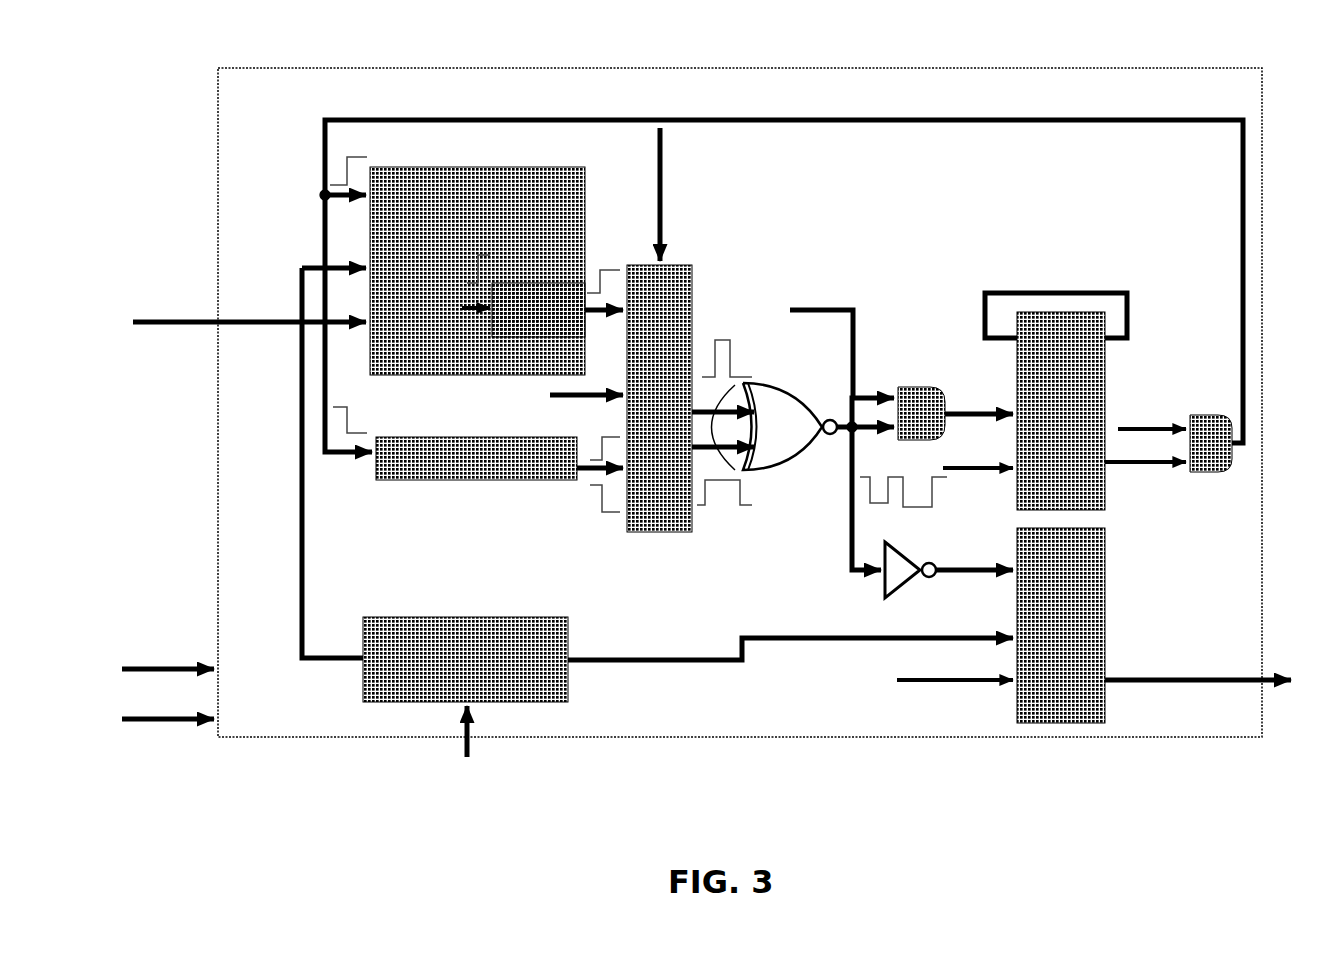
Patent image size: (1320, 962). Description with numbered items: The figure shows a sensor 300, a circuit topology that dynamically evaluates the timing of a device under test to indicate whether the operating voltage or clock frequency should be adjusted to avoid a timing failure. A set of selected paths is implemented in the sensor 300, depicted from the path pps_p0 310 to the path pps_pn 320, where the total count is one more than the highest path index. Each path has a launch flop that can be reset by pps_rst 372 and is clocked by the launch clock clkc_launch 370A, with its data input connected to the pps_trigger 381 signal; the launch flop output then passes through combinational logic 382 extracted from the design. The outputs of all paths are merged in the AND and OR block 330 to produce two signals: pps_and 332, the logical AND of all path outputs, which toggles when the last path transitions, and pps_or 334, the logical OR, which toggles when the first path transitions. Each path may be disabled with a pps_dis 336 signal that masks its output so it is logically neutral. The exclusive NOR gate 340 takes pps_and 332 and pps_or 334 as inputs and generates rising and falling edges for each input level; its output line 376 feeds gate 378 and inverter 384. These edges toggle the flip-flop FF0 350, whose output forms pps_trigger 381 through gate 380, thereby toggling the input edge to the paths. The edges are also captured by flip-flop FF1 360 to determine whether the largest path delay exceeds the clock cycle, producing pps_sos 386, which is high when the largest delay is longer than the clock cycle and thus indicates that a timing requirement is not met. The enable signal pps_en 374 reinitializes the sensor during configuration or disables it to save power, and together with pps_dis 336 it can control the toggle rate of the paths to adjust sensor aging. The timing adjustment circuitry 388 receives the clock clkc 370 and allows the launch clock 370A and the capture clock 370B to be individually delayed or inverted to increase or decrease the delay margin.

The sensor 300 is at (727, 40).
The pps_p0 path 310 is at (467, 167).
The pps_pn path 320 is at (467, 480).
The n+1 bit AND / OR block 330 is at (693, 290).
The pps_and signal 332 is at (697, 402).
The pps_or signal 334 is at (697, 463).
The pps_dis signal 336 is at (665, 212).
The exclusive NOR gate 340 is at (777, 470).
The flip-flop FF0 350 is at (1045, 292).
The flip-flop FF1 360 is at (1102, 600).
The clock 370 is at (462, 742).
The launch clock 370A is at (302, 488).
The capture clock 370B is at (688, 660).
The pps_rst signal 372 is at (150, 322).
The pps_en signal 374 is at (152, 722).
The XNOR output signal line 376 is at (848, 548).
The AND gate A0 378 is at (985, 410).
The AND gate A1 380 is at (1140, 462).
The pps_trigger signal 381 is at (1015, 120).
The combinational logic block 382 is at (470, 300).
The inverter 384 is at (973, 568).
The pps_sos signal 386 is at (1133, 682).
The timing adjustment circuitry 388 is at (465, 617).